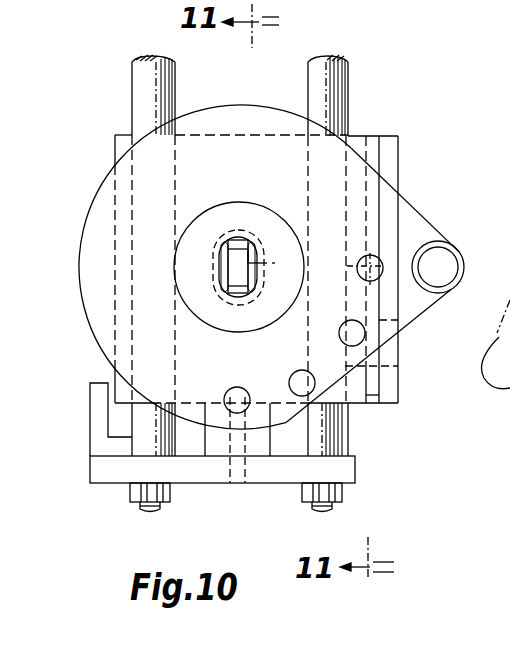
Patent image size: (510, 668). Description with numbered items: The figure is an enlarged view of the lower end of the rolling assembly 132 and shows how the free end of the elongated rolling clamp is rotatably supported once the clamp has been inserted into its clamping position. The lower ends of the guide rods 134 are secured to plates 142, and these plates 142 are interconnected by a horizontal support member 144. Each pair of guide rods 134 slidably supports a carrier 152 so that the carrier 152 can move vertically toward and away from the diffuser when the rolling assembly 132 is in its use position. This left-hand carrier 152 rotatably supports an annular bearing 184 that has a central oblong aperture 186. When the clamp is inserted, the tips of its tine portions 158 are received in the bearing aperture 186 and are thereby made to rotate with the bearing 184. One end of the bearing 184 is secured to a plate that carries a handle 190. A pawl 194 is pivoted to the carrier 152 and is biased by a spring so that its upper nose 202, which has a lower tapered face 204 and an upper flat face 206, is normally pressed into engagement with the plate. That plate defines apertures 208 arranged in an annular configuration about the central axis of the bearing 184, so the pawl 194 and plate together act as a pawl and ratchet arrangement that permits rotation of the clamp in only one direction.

The rolling assembly 132 is at (355, 98).
The guide rods 134 is at (312, 70).
The plates 142 is at (185, 473).
The horizontal support member 144 is at (95, 422).
The carrier 152 is at (122, 145).
The tine portions 158 is at (247, 291).
The annular bearing 184 is at (208, 220).
The central oblong aperture 186 is at (222, 252).
The handle 190 is at (450, 263).
The pawl 194 is at (405, 326).
The upper nose 202 is at (385, 267).
The lower tapered face 204 is at (368, 281).
The upper flat face 206 is at (375, 258).
The apertures 208 is at (345, 345).